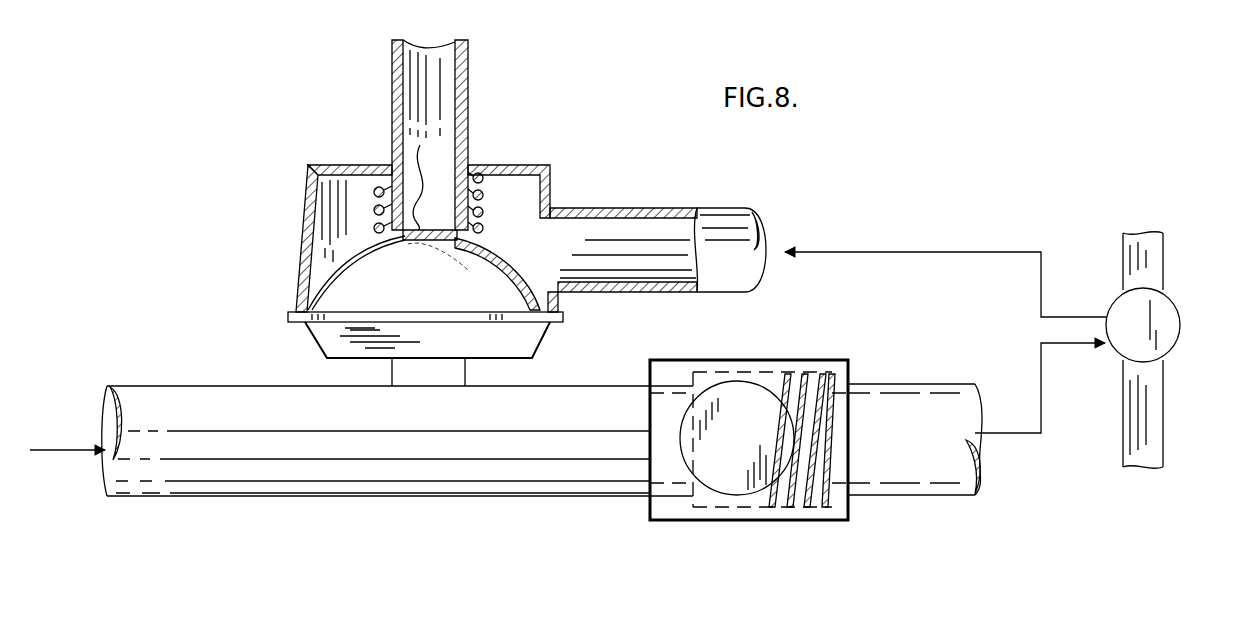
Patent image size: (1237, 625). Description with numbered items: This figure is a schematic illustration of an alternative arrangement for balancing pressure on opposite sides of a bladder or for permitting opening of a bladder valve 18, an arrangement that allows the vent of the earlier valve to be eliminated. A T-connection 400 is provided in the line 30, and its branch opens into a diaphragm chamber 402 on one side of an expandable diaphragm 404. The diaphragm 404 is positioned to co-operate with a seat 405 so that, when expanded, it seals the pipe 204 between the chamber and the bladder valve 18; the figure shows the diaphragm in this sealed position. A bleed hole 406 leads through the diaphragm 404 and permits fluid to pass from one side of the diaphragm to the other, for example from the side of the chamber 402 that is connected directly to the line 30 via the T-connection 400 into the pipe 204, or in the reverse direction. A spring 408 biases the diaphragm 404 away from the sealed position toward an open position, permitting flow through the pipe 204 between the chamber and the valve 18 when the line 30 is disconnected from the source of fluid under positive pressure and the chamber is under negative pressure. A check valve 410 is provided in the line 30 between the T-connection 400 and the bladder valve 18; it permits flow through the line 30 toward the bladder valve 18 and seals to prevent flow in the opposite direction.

The bladder valve 18 is at (1168, 327).
The line 30 is at (388, 497).
The pipe 204 is at (468, 132).
The T-connection 400 is at (482, 377).
The diaphragm chamber 402 is at (353, 292).
The expandable diaphragm 404 is at (352, 246).
The seat 405 is at (468, 246).
The bleed hole 406 is at (390, 160).
The spring 408 is at (502, 160).
The check valve 410 is at (770, 521).